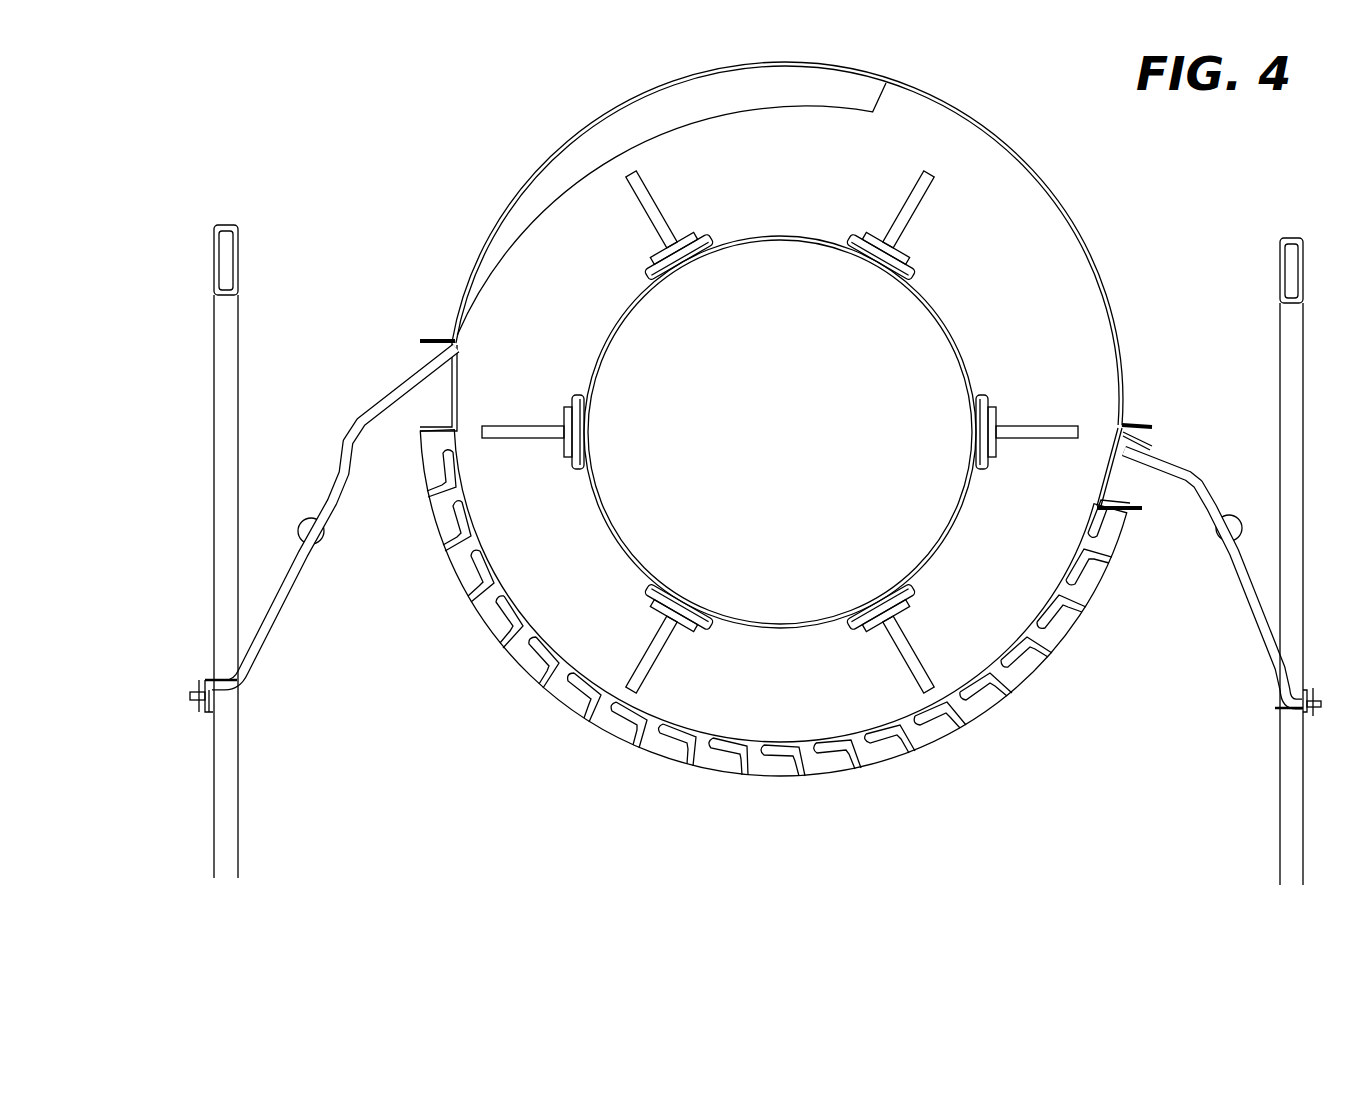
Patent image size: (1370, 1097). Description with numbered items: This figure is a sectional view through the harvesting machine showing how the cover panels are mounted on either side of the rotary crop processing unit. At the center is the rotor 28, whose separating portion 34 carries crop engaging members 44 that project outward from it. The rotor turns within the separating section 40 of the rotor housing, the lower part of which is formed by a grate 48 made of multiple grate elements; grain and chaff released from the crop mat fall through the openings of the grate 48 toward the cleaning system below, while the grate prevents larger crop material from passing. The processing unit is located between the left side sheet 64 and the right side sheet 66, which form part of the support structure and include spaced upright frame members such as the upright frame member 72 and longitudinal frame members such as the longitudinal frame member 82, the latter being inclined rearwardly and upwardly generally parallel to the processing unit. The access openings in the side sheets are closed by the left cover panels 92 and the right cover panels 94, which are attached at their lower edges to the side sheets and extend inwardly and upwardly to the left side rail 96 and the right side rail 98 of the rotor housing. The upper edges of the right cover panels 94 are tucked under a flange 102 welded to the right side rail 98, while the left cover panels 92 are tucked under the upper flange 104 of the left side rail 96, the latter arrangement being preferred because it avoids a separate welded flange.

The rotor 28 is at (778, 235).
The separating portion 34 is at (1085, 350).
The separating section 40 is at (1093, 248).
The crop engaging members 44 is at (905, 625).
The grate 48 is at (668, 752).
The left side sheet 64 is at (207, 765).
The right side sheet 66 is at (1300, 773).
The upright frame member 72 is at (218, 483).
The longitudinal frame member 82 is at (240, 258).
The left cover panels 92 is at (291, 626).
The right cover panels 94 is at (1238, 592).
The left side rail 96 is at (453, 383).
The right side rail 98 is at (1098, 480).
The flange 102 is at (1152, 433).
The upper flange 104 is at (440, 340).